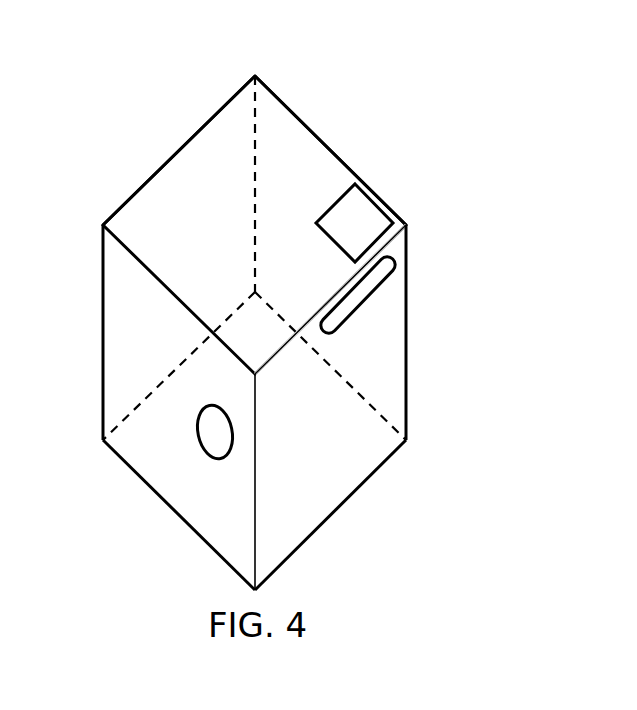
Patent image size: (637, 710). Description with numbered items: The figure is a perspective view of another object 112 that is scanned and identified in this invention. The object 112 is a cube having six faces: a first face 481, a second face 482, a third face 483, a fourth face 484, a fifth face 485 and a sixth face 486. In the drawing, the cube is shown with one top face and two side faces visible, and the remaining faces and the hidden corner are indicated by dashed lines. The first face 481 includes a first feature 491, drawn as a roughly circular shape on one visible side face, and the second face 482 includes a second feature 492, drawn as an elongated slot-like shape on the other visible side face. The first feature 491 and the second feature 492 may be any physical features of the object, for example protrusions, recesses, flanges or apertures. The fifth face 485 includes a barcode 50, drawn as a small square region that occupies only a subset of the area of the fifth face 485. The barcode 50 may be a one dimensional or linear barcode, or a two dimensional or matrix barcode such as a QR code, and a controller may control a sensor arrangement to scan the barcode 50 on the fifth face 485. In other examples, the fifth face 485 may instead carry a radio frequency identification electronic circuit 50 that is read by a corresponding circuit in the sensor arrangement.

The object 112 is at (158, 67).
The first face 481 is at (182, 478).
The second face 482 is at (352, 456).
The third face 483 is at (308, 122).
The fourth face 484 is at (158, 168).
The fifth face 485 is at (230, 243).
The sixth face 486 is at (313, 437).
The first feature 491 is at (198, 437).
The second feature 492 is at (393, 258).
The barcode 50 is at (358, 215).